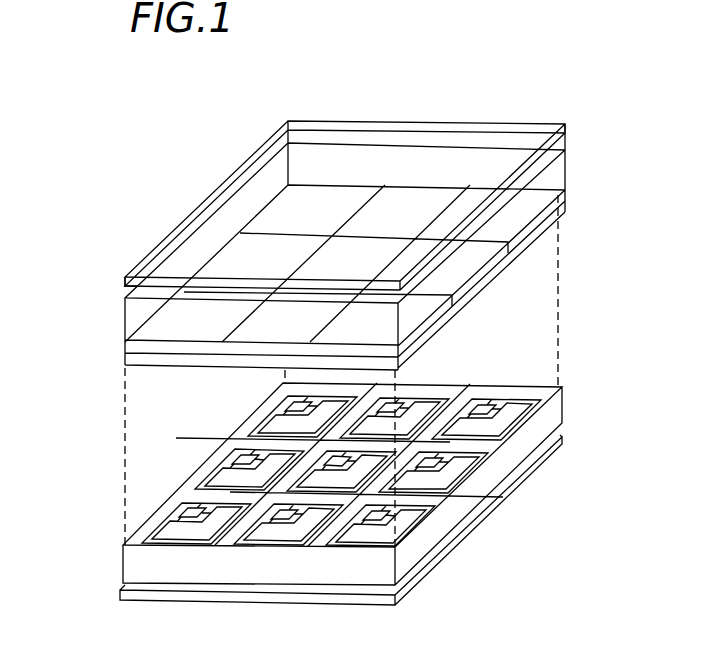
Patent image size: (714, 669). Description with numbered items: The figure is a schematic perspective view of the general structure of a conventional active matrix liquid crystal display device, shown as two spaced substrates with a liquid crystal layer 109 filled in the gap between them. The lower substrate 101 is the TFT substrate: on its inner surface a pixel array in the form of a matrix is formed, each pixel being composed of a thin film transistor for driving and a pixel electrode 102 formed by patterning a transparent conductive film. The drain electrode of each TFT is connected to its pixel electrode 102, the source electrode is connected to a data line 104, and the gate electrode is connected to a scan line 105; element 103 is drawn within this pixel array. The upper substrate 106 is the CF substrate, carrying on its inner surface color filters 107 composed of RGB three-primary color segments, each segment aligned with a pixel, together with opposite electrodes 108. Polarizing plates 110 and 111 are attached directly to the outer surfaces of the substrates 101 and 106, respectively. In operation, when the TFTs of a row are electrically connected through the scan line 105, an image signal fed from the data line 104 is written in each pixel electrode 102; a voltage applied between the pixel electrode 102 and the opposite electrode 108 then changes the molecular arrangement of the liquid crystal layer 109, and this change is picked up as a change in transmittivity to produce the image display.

The substrate 101 is at (124, 562).
The pixel electrode 102 is at (410, 517).
The pixel electrode 103 is at (363, 530).
The data line 104 is at (512, 430).
The scan line 105 is at (462, 448).
The substrate 106 is at (130, 318).
The color filters 107 is at (567, 190).
The opposite electrodes 108 is at (566, 208).
The liquid crystal layer 109 is at (553, 318).
The polarizing plate 110 is at (122, 600).
The polarizing plate 111 is at (125, 277).